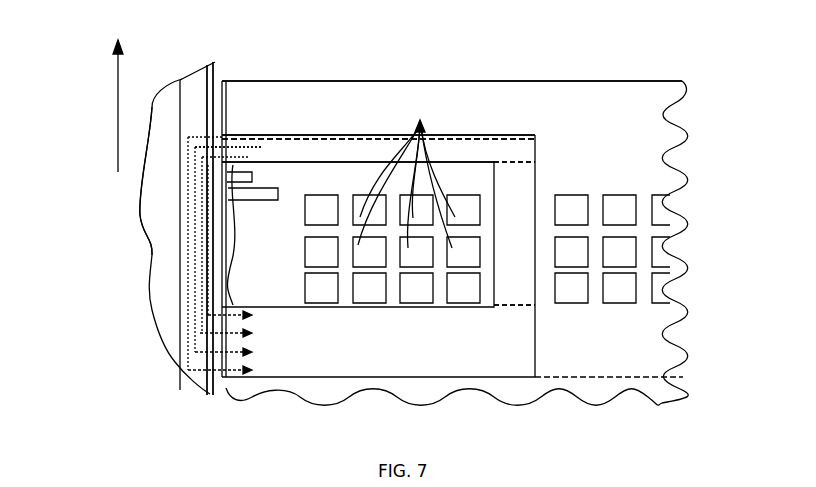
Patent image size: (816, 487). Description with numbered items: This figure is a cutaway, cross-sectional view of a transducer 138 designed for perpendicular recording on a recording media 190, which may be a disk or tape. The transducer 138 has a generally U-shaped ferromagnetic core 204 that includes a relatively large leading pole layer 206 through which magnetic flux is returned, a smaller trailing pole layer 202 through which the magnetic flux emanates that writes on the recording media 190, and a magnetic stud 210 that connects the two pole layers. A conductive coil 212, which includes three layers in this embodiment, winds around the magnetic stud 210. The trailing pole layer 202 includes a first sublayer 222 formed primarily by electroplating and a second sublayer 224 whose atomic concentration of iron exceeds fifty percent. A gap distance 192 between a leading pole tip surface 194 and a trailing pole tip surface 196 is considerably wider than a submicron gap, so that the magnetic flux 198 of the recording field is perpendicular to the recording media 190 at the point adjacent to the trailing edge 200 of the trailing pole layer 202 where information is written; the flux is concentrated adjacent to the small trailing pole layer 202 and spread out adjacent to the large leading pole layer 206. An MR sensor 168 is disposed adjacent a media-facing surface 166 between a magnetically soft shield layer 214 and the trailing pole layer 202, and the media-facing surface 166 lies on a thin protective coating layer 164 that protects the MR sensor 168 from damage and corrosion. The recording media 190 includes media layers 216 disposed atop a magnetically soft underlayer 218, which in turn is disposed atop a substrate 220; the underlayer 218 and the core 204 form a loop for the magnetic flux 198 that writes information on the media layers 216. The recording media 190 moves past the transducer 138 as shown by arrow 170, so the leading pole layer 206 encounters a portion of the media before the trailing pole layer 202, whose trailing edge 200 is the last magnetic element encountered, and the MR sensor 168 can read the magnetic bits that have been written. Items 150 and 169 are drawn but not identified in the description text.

The transducer 138 is at (478, 56).
The conductive traces 150 is at (406, 174).
The protective coating layer 164 is at (230, 394).
The media-facing surface 166 is at (212, 402).
The MR sensor 168 is at (255, 176).
The substrate 169 is at (346, 78).
The arrow 170 is at (118, 80).
The recording media 190 is at (156, 388).
The gap distance 192 is at (236, 233).
The leading pole tip surface 194 is at (252, 341).
The trailing pole tip surface 196 is at (238, 150).
The magnetic flux 198 is at (188, 342).
The trailing edge 200 is at (267, 135).
The trailing pole layer 202 is at (538, 135).
The ferromagnetic core 204 is at (493, 318).
The leading pole layer 206 is at (538, 338).
The magnetic stud 210 is at (538, 306).
The conductive coil 212 is at (690, 207).
The magnetically soft shield layer 214 is at (245, 200).
The media layers 216 is at (213, 62).
The magnetically soft underlayer 218 is at (187, 78).
The substrate 220 is at (178, 217).
The first sublayer 222 is at (462, 137).
The second sublayer 224 is at (488, 160).